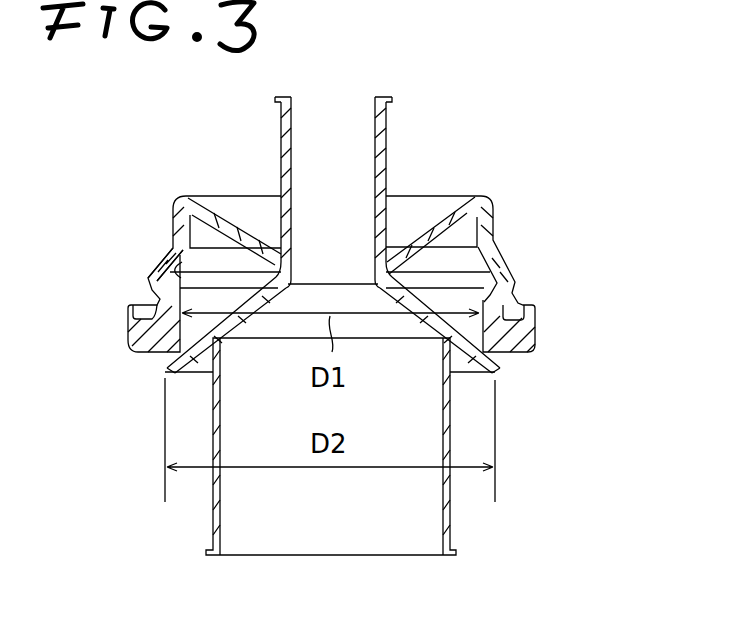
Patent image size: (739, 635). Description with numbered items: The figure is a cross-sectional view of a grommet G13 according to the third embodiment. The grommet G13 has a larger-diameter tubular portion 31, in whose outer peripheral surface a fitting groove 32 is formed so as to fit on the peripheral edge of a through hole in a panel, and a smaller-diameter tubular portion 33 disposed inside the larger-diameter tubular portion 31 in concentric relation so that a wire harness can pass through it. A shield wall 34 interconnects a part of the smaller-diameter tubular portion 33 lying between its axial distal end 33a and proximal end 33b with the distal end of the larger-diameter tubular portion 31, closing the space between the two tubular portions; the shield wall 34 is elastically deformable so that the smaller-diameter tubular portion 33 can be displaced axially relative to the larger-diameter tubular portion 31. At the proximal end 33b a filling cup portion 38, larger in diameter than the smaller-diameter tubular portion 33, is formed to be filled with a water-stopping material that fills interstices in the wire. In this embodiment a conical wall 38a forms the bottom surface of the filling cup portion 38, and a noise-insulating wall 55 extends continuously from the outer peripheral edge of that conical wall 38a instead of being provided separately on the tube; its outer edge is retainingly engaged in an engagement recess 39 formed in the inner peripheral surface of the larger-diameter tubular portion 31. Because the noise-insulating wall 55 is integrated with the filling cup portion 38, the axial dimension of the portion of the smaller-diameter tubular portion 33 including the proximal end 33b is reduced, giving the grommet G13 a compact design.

The grommet G13 is at (452, 172).
The smaller-diameter tubular portion 33 is at (391, 143).
The distal end of the smaller-diameter tubular portion 33a is at (389, 96).
The proximal end of the smaller-diameter tubular portion 33b is at (400, 273).
The shield wall 34 is at (231, 230).
The engagement recess 39 is at (182, 260).
The fitting groove 32 is at (128, 305).
The larger-diameter tubular portion 31 is at (158, 344).
The conical wall 38a is at (500, 304).
The filling cup portion 38 is at (450, 502).
The noise-insulating wall 55 is at (190, 353).